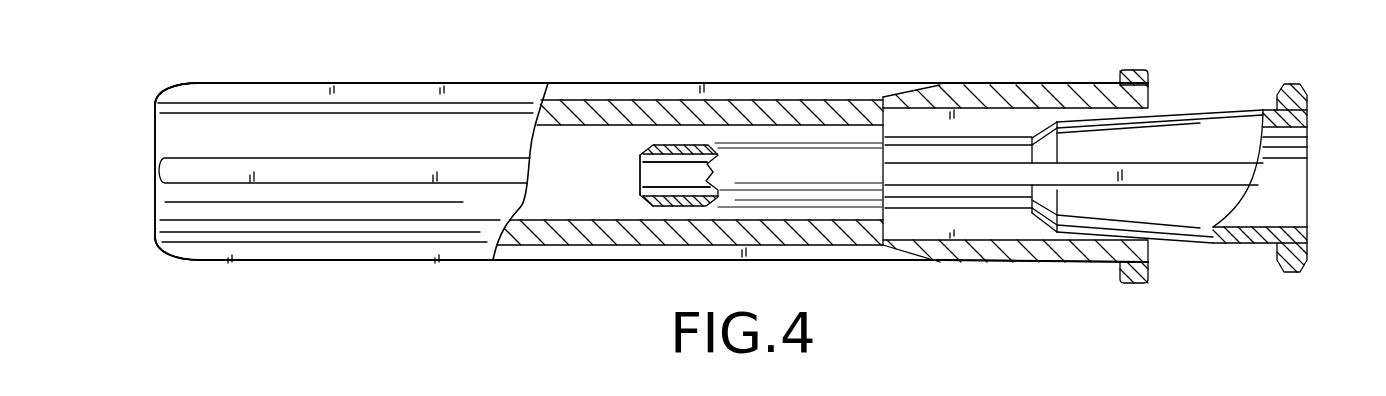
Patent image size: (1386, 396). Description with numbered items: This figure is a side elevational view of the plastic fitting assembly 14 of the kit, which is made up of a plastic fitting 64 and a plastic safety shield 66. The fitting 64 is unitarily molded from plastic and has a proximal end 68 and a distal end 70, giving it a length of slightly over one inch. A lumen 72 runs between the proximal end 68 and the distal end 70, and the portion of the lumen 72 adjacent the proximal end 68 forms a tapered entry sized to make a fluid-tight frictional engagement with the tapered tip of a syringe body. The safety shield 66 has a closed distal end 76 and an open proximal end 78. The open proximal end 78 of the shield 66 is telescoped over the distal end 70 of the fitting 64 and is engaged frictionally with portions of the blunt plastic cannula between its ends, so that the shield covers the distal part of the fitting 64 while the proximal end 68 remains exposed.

The fitting assembly 14 is at (690, 77).
The plastic fitting 64 is at (1194, 249).
The safety shield 66 is at (266, 84).
The proximal end 68 is at (1290, 88).
The distal end 70 is at (650, 152).
The lumen 72 is at (663, 177).
The closed distal end 76 is at (153, 138).
The open proximal end 78 is at (1130, 72).